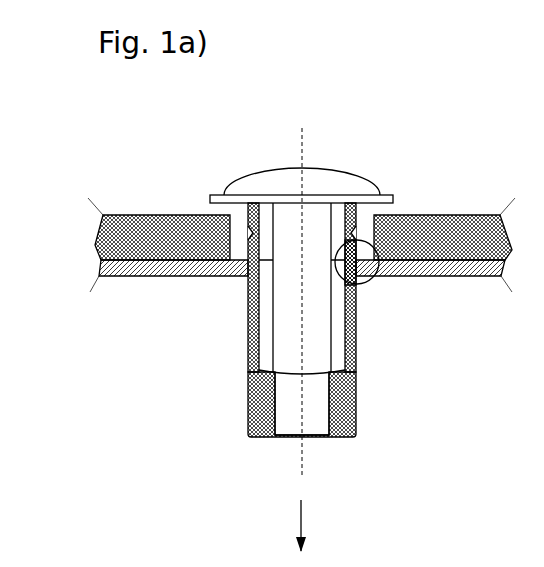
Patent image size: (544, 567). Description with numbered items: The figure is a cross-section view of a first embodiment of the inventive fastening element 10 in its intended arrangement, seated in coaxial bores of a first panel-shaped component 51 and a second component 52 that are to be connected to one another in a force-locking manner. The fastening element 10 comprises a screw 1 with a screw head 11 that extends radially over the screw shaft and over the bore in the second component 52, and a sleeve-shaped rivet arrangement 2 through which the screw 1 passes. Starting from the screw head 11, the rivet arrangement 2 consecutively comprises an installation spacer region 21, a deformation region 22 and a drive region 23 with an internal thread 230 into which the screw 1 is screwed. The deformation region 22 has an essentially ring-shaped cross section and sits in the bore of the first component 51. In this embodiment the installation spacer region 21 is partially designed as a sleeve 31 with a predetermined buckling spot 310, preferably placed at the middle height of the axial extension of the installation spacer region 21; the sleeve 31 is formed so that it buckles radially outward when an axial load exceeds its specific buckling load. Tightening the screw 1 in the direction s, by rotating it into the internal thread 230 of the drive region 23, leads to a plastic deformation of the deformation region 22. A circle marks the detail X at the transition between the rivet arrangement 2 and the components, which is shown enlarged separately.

The screw 1 is at (311, 284).
The screw head 11 is at (380, 192).
The rivet arrangement 2 is at (311, 281).
The installation spacer region 21 is at (359, 240).
The deformation region 22 is at (358, 313).
The drive region 23 is at (358, 405).
The internal thread 230 is at (273, 411).
The sleeve 31 is at (247, 216).
The predetermined buckling spot 310 is at (247, 241).
The first panel-shaped component 51 is at (157, 281).
The second component 52 is at (175, 214).
The fastening element 10 is at (296, 321).
The detail X is at (370, 283).
The direction s is at (284, 523).